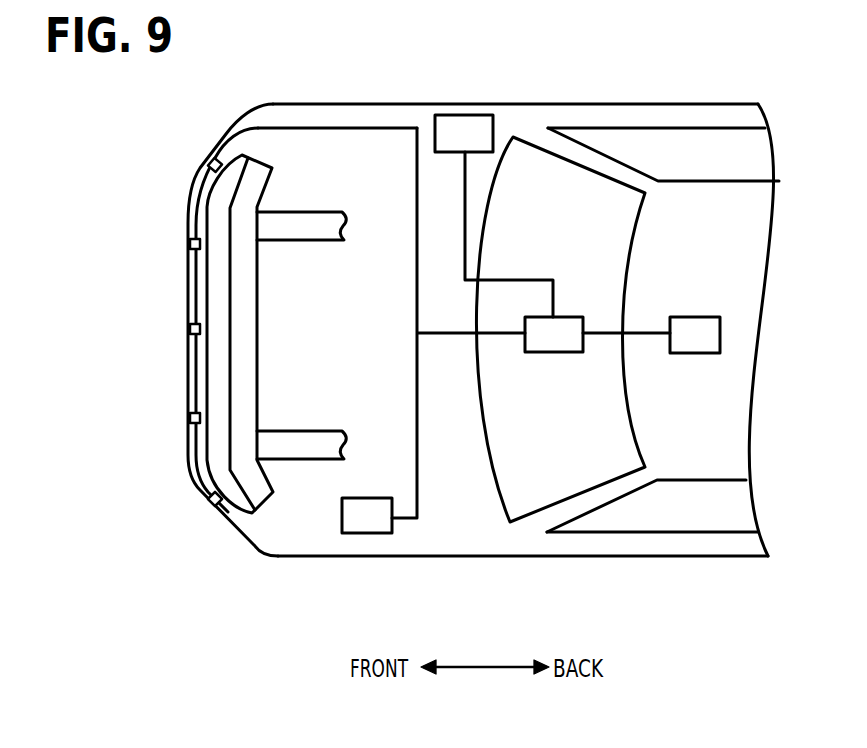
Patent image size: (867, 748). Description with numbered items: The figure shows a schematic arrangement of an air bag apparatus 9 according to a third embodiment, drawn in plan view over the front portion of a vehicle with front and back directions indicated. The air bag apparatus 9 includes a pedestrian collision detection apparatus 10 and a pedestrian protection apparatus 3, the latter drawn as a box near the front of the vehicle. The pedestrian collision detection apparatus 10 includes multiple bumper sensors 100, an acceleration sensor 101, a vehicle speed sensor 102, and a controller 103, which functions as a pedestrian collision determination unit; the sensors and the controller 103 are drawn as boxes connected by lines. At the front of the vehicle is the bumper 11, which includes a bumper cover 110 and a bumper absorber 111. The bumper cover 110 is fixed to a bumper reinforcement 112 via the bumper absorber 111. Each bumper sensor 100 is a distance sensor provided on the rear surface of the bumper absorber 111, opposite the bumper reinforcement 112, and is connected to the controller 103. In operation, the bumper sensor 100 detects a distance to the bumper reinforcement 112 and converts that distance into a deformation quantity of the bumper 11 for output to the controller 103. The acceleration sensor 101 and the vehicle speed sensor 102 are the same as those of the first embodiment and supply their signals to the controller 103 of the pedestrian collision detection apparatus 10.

The air bag apparatus 9 is at (664, 47).
The pedestrian protection apparatus 3 is at (466, 121).
The pedestrian collision detection apparatus 10 is at (540, 405).
The bumper 11 is at (187, 278).
The bumper sensor 100 is at (189, 242).
The acceleration sensor 101 is at (697, 317).
The vehicle speed sensor 102 is at (368, 534).
The controller 103 is at (566, 352).
The bumper cover 110 is at (187, 352).
The bumper absorber 111 is at (213, 377).
The bumper reinforcement 112 is at (240, 442).